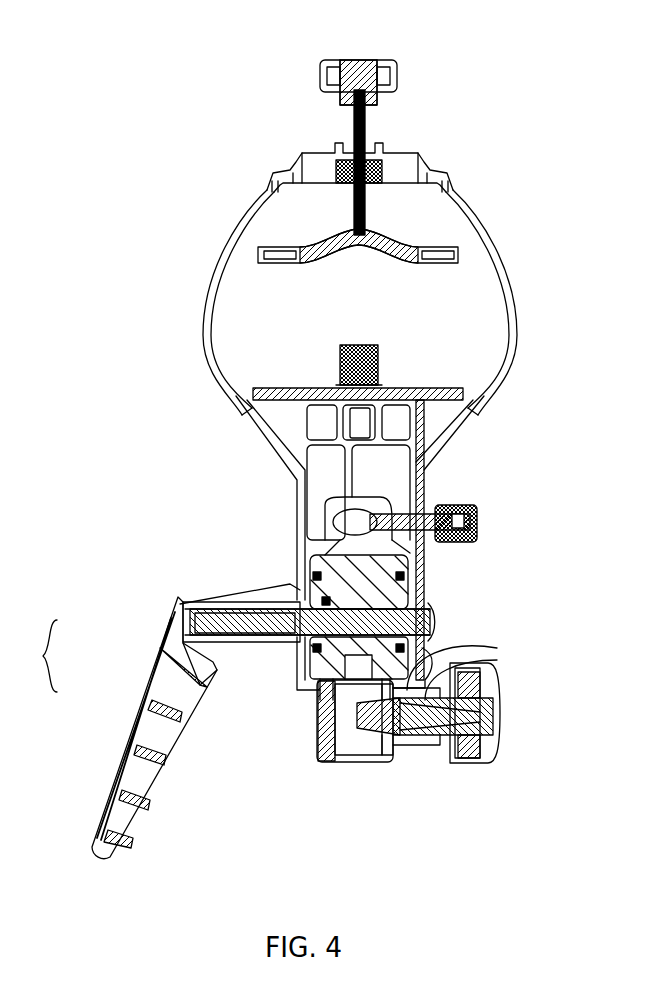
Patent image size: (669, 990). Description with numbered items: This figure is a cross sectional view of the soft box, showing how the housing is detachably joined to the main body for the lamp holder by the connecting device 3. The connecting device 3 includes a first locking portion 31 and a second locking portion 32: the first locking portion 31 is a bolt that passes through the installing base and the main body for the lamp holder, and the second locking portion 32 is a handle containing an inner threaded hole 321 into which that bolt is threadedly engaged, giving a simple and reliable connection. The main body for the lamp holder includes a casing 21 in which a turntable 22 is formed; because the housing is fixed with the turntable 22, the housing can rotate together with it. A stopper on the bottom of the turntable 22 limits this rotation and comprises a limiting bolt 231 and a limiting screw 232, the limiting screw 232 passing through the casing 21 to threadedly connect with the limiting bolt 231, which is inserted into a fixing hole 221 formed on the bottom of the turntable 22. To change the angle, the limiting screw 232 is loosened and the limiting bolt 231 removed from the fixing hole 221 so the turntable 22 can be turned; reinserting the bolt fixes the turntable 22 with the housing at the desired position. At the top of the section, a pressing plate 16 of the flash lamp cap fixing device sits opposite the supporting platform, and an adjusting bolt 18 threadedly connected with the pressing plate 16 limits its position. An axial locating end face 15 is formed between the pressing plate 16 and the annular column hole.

The connecting device 3 is at (38, 656).
The axial locating end face 15 is at (320, 177).
The pressing plate 16 is at (262, 263).
The adjusting bolt 18 is at (360, 80).
The casing 21 is at (316, 686).
The turntable 22 is at (423, 583).
The fixing hole 221 is at (497, 652).
The limiting bolt 231 is at (352, 742).
The limiting screw 232 is at (437, 742).
The first locking portion 31 is at (185, 623).
The second locking portion 32 is at (157, 678).
The inner threaded hole 321 is at (214, 598).